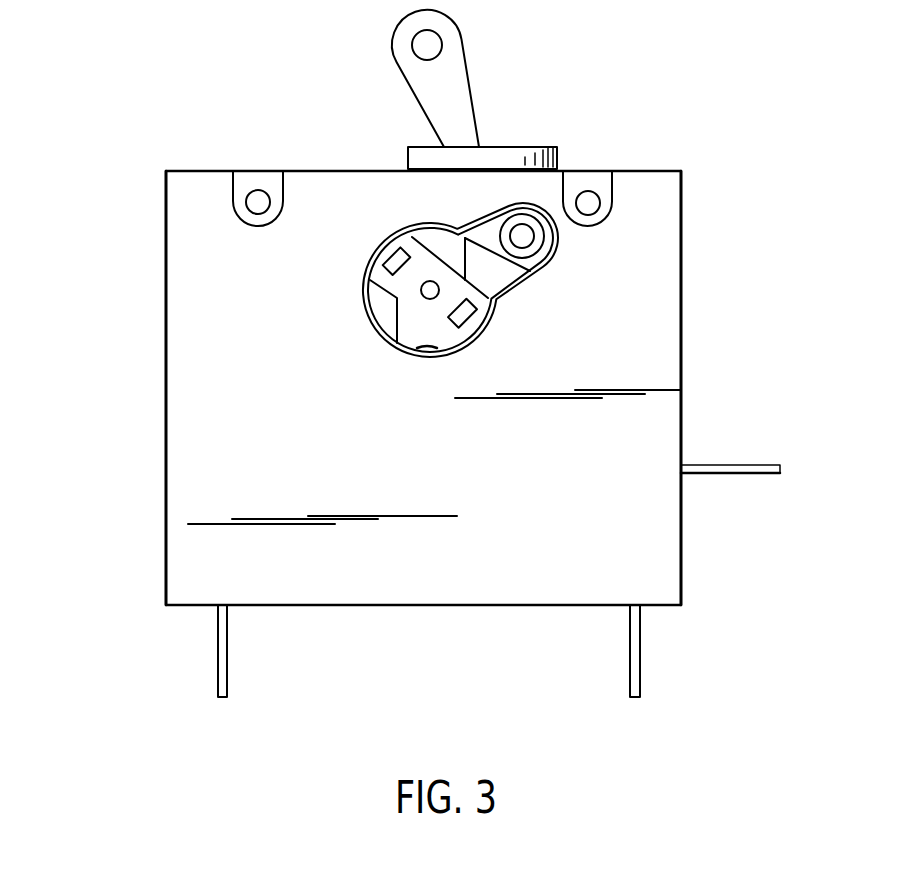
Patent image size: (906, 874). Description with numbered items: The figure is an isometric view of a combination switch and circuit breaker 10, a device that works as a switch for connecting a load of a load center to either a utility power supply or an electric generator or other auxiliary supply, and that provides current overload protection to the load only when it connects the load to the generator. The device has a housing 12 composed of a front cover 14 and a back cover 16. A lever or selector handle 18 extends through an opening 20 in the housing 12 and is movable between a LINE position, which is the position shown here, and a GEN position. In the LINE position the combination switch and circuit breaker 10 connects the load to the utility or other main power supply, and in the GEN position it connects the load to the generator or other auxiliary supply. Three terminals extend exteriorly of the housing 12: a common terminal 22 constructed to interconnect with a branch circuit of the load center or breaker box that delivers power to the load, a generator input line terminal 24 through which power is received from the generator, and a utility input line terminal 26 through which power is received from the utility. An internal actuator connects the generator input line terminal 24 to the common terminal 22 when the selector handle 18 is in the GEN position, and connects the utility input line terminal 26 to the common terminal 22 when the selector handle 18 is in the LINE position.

The combination switch and circuit breaker 10 is at (730, 224).
The housing 12 is at (100, 225).
The front cover 14 is at (681, 345).
The back cover 16 is at (166, 343).
The selector handle 18 is at (445, 72).
The opening 20 is at (508, 147).
The common terminal 22 is at (218, 677).
The generator input line terminal 24 is at (630, 677).
The utility input line terminal 26 is at (735, 473).